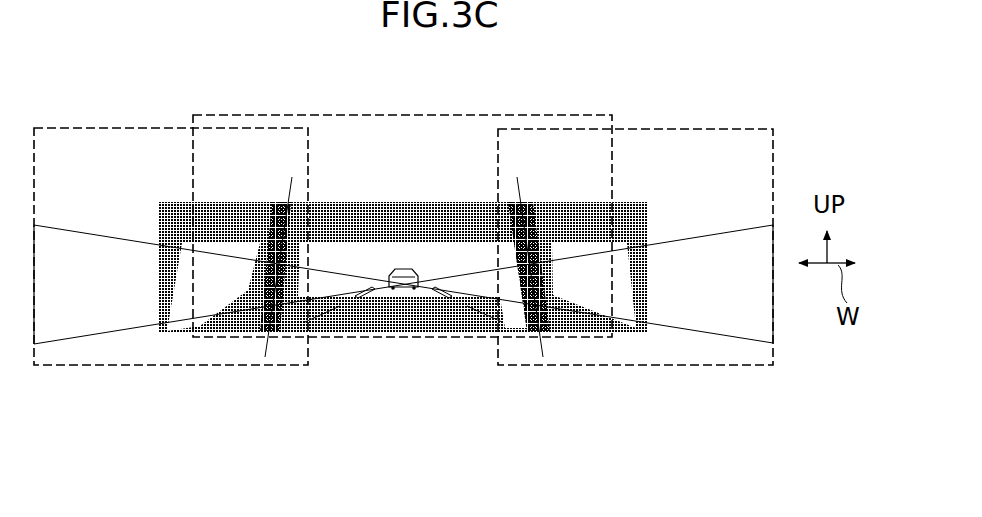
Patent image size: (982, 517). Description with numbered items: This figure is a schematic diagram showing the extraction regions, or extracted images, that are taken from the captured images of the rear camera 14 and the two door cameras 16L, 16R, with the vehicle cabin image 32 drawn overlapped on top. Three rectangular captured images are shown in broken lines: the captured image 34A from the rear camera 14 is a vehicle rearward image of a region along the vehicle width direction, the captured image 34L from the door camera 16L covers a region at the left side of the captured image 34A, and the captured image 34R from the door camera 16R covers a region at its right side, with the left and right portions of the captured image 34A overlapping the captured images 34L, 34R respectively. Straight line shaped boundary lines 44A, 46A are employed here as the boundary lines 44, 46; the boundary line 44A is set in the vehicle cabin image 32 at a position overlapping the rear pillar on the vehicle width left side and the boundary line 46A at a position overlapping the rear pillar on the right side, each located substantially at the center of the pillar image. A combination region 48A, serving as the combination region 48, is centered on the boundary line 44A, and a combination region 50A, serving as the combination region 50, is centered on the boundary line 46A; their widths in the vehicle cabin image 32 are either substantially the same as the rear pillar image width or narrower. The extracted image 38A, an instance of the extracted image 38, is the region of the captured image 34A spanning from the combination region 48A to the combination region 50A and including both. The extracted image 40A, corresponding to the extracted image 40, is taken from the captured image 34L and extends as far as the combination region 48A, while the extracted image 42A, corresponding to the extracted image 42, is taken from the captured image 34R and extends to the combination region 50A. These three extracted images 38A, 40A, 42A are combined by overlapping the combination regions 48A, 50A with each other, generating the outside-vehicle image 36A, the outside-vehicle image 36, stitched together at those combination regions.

The captured image 34L is at (171, 224).
The door camera 16L is at (55, 127).
The captured image 34A is at (402, 210).
The rear camera 14 is at (425, 114).
The captured image 34R is at (644, 224).
The door camera 16R is at (652, 128).
The outside-vehicle image 36A is at (461, 235).
The outside-vehicle image 36 is at (622, 193).
The extracted image 38A is at (412, 235).
The extracted image 38 is at (367, 201).
The extracted image 40A is at (164, 253).
The extracted image 40 is at (157, 222).
The extracted image 42A is at (658, 245).
The extracted image 42 is at (650, 207).
The boundary line 44A is at (255, 237).
The boundary line 44 is at (289, 195).
The boundary line 46A is at (548, 236).
The boundary line 46 is at (525, 195).
The combination region 48A is at (346, 273).
The combination region 48 is at (283, 334).
The combination region 50A is at (596, 270).
The combination region 50 is at (548, 335).
The vehicle cabin image 32 is at (635, 228).